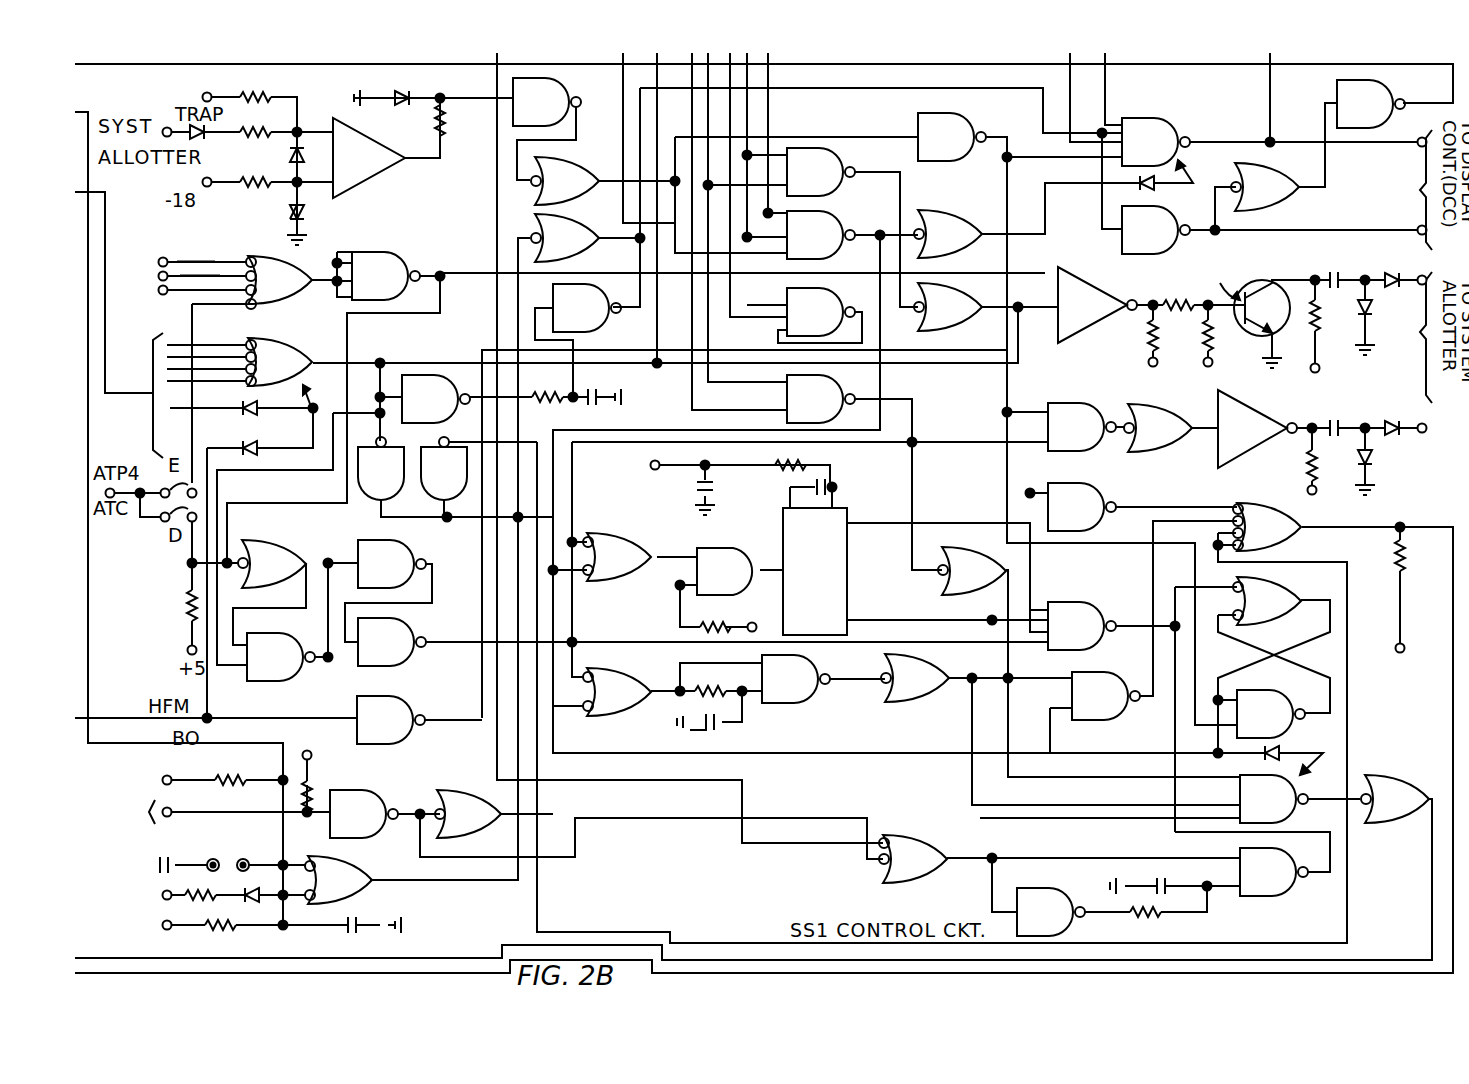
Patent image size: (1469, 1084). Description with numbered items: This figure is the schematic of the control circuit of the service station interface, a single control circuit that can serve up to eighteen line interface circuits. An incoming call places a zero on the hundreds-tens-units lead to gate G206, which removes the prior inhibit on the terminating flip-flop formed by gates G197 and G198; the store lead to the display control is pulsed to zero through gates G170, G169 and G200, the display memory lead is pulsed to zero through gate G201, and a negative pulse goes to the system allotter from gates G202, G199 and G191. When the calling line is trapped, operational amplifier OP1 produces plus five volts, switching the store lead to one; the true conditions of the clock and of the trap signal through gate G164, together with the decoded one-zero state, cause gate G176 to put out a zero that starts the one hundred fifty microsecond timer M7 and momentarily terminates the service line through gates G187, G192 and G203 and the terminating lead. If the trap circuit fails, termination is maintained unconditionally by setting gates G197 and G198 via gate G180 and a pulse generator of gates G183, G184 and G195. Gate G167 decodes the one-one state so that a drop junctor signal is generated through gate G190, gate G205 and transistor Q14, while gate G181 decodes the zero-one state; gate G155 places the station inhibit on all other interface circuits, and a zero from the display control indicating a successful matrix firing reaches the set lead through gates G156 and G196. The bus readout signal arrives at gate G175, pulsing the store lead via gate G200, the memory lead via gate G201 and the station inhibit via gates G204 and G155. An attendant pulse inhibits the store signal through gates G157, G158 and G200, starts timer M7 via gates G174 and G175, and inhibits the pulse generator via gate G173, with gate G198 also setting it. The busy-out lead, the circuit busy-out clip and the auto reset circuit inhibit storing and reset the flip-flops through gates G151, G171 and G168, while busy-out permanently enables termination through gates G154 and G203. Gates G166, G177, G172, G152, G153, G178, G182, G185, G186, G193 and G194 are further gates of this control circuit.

The operational amplifier OP1 is at (338, 167).
The gate G164 is at (547, 129).
The gate G166 is at (724, 195).
The gate G168 is at (820, 197).
The gate G169 is at (578, 340).
The gate G167 is at (811, 227).
The gate G176 is at (885, 481).
The gate G180 is at (820, 315).
The gate G181 is at (810, 472).
The gate G177 is at (859, 419).
The gate G187 is at (816, 216).
The gate G190 is at (685, 325).
The gate G157 is at (248, 364).
The gate G158 is at (336, 407).
The gate G206 is at (235, 390).
The gate G170 is at (419, 514).
The gate G171 is at (455, 479).
The gate G154 is at (479, 477).
The gate G172 is at (247, 592).
The gate G173 is at (302, 620).
The gate G174 is at (388, 591).
The gate G175 is at (702, 681).
The gate G152 is at (483, 794).
The gate G153 is at (494, 814).
The gate G151 is at (277, 890).
The 150 microsecond timer M7 is at (799, 555).
The gate G178 is at (657, 586).
The gate G182 is at (823, 679).
The gate G185 is at (1060, 736).
The gate G186 is at (1089, 662).
The gate G183 is at (1059, 873).
The gate G184 is at (1128, 907).
The gate G195 is at (1252, 864).
The gate G196 is at (1300, 799).
The gate G156 is at (1396, 818).
The gate G191 is at (1086, 427).
The gate G199 is at (1171, 428).
The gate G202 is at (1322, 442).
The gate G192 is at (1133, 507).
The gate G203 is at (1334, 588).
The gate G193 is at (1133, 709).
The gate G194 is at (1143, 637).
The gate G198 is at (1272, 667).
The gate G197 is at (1270, 732).
The gate G200 is at (1274, 142).
The gate G201 is at (1274, 220).
The gate G204 is at (1284, 157).
The gate G155 is at (1387, 97).
The gate G205 is at (1151, 328).
The transistor Q14 is at (1310, 320).